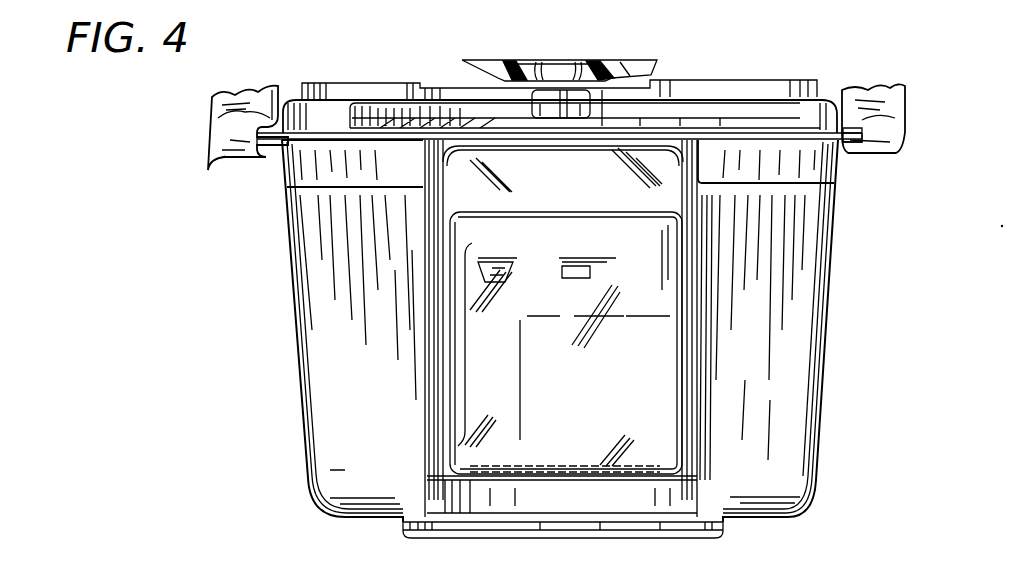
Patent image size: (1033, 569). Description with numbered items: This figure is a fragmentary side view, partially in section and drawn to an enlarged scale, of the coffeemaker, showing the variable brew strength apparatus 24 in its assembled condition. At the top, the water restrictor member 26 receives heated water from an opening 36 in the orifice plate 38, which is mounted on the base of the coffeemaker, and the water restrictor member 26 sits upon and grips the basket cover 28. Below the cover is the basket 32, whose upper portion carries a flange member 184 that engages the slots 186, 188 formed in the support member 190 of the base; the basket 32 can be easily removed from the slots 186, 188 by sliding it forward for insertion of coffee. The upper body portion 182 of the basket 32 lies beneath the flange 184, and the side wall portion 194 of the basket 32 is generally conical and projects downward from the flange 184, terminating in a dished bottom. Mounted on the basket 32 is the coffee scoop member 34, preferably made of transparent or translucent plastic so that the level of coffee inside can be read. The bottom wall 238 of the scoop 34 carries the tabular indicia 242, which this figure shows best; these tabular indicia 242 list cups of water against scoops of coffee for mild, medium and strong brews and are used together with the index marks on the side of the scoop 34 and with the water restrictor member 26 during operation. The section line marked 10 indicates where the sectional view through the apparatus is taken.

The section line 10- 10 is at (722, 200).
The variable brew strength apparatus 24 is at (822, 410).
The water restrictor member 26 is at (525, 108).
The basket cover 28 is at (294, 100).
The basket 32 is at (447, 462).
The coffee scoop member 34 is at (587, 455).
The opening 36 is at (516, 60).
The orifice plate 38 is at (640, 62).
The upper band 182 is at (838, 163).
The flange member 184 is at (290, 157).
The slot 186 is at (215, 128).
The slot 188 is at (896, 132).
The support member 190 is at (897, 92).
The side wall portion 194 is at (810, 354).
The bottom wall 238 is at (660, 270).
The tabular indicia 242 is at (478, 342).